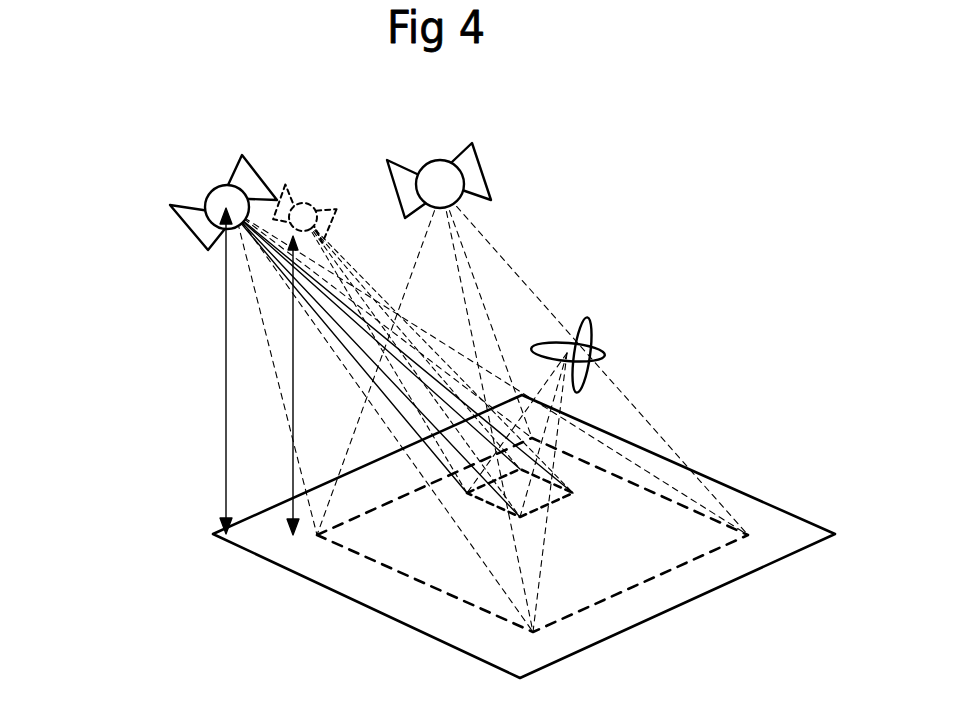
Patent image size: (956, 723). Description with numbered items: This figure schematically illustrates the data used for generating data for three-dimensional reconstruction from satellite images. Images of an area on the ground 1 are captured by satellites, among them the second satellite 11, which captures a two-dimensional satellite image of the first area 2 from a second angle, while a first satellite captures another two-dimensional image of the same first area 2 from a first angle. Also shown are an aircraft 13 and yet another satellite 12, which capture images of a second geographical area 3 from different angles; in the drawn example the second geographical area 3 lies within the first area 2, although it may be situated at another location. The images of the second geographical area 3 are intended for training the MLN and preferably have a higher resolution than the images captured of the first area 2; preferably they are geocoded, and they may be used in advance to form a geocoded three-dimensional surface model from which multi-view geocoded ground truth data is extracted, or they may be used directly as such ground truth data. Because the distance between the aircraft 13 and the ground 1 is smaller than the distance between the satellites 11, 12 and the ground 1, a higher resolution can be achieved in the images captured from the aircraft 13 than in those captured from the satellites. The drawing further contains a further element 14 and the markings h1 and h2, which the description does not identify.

The ground 1 is at (788, 530).
The first area 2 is at (607, 567).
The second geographical area 3 is at (552, 488).
The second satellite 11 is at (210, 211).
The satellite 12 is at (473, 153).
The aircraft 13 is at (600, 351).
The tilted light source position 14 is at (292, 240).
The height of first light source h1 is at (226, 468).
The height of tilted light source h2 is at (293, 405).